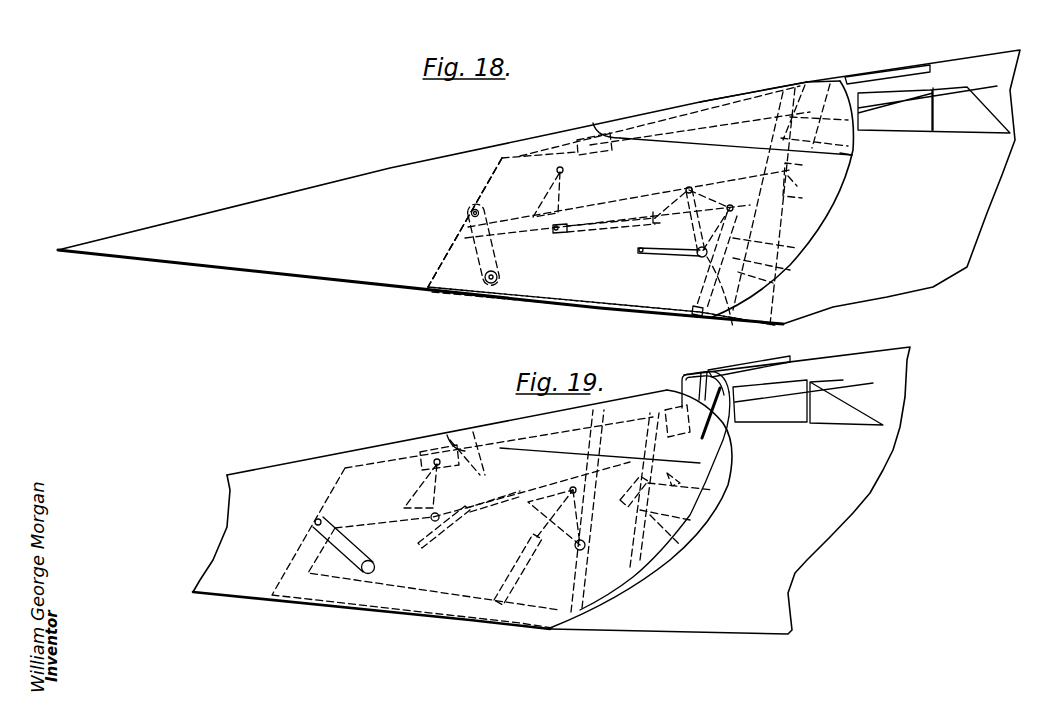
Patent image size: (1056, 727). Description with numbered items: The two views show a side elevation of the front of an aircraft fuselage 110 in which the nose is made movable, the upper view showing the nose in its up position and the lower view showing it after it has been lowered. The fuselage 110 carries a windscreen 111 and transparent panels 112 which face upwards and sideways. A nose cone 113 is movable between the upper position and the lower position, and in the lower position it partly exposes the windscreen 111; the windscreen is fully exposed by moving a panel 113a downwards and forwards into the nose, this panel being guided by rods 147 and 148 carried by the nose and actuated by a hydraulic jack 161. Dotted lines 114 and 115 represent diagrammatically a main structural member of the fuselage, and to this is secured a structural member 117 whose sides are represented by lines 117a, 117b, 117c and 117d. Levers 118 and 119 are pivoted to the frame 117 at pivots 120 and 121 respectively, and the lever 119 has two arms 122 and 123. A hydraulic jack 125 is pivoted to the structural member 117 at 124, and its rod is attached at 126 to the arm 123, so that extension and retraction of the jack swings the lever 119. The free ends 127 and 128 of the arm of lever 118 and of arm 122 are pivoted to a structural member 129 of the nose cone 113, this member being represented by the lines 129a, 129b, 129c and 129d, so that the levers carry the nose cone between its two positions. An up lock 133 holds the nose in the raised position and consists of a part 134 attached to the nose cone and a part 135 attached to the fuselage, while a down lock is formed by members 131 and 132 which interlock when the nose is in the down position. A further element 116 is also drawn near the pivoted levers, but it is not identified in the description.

In FIG. 18, the fuselage 110 is at (970, 268).
In FIG. 19, the fuselage 110 is at (845, 353).
In FIG. 18, the windscreen 111 is at (810, 82).
In FIG. 19, the windscreen 111 is at (681, 381).
In FIG. 18, the transparent panels 112 is at (873, 112).
In FIG. 19, the transparent panels 112 is at (771, 395).
In FIG. 18, the nose cone 113 is at (258, 199).
In FIG. 19, the nose cone 113 is at (355, 453).
In FIG. 18, the panel 113a is at (738, 98).
In FIG. 18, the dotted line 114 is at (774, 152).
In FIG. 18, the dotted line 115 is at (845, 157).
In FIG. 18, the flap guide 116 is at (767, 281).
In FIG. 18, the structural member 117 is at (780, 323).
In FIG. 18, the side of structural member 117a is at (598, 206).
In FIG. 18, the side of structural member 117b is at (798, 249).
In FIG. 18, the side of structural member 117c is at (535, 298).
In FIG. 18, the side of structural member 117d is at (450, 257).
In FIG. 18, the lever 118 is at (467, 293).
In FIG. 18, the lever 119 is at (697, 259).
In FIG. 18, the pivot 120 is at (484, 293).
In FIG. 18, the pivot 121 is at (697, 318).
In FIG. 18, the arm 122 is at (694, 247).
In FIG. 18, the arm 123 is at (772, 266).
In FIG. 18, the pivot 124 is at (556, 233).
In FIG. 18, the hydraulic jack 125 is at (648, 200).
In FIG. 18, the attachment point 126 is at (746, 213).
In FIG. 18, the free end of arm 127 is at (467, 227).
In FIG. 18, the free end of arm 128 is at (700, 180).
In FIG. 18, the structural member of nose cone 129 is at (504, 157).
In FIG. 18, the line representing structural member 129a is at (680, 116).
In FIG. 18, the line representing structural member 129b is at (735, 320).
In FIG. 18, the line representing structural member 129c is at (592, 313).
In FIG. 18, the line representing structural member 129d is at (472, 204).
In FIG. 18, the down lock member 131 is at (597, 123).
In FIG. 19, the down lock member 131 is at (447, 437).
In FIG. 18, the down lock member 132 is at (556, 172).
In FIG. 19, the down lock member 132 is at (439, 483).
In FIG. 18, the up lock 133 is at (805, 190).
In FIG. 19, the up lock part 134 is at (668, 520).
In FIG. 19, the up lock part 135 is at (700, 489).
In FIG. 19, the rod 147 is at (443, 528).
In FIG. 19, the rod 148 is at (692, 521).
In FIG. 19, the hydraulic jack 161 is at (537, 553).